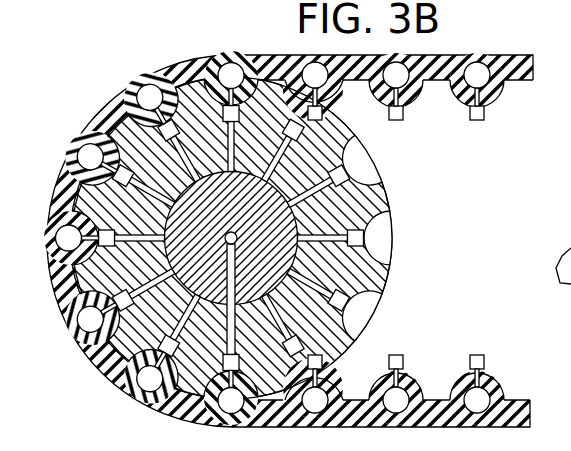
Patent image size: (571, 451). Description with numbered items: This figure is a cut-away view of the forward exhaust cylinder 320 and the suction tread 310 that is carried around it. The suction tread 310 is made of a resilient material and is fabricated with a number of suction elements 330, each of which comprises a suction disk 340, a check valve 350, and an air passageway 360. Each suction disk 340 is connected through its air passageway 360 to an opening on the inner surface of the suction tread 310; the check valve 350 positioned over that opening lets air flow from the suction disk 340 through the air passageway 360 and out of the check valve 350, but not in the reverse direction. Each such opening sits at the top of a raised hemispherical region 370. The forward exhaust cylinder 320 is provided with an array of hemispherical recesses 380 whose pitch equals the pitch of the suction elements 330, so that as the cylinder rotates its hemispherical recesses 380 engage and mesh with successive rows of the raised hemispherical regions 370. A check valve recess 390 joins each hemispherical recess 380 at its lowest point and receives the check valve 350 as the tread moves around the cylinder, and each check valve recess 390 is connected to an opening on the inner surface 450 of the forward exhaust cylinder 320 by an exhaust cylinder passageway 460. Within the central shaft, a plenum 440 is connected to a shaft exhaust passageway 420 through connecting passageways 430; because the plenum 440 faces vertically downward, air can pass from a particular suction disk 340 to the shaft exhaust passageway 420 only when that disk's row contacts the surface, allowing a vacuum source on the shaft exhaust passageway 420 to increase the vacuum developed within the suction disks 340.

The suction tread 310 is at (96, 110).
The forward exhaust cylinder 320 is at (382, 190).
The suction element 330 is at (153, 80).
The suction disk 340 is at (152, 388).
The check valve 350 is at (322, 108).
The air passageway 360 is at (492, 378).
The raised hemispherical region 370 is at (412, 92).
The hemispherical recess 380 is at (385, 258).
The check valve recess 390 is at (368, 165).
The shaft exhaust passageway 420 is at (233, 231).
The connecting passageway 430 is at (226, 262).
The plenum 440 is at (233, 338).
The inner surface of forward exhaust cylinder 450 is at (158, 266).
The exhaust cylinder passageway 460 is at (167, 190).